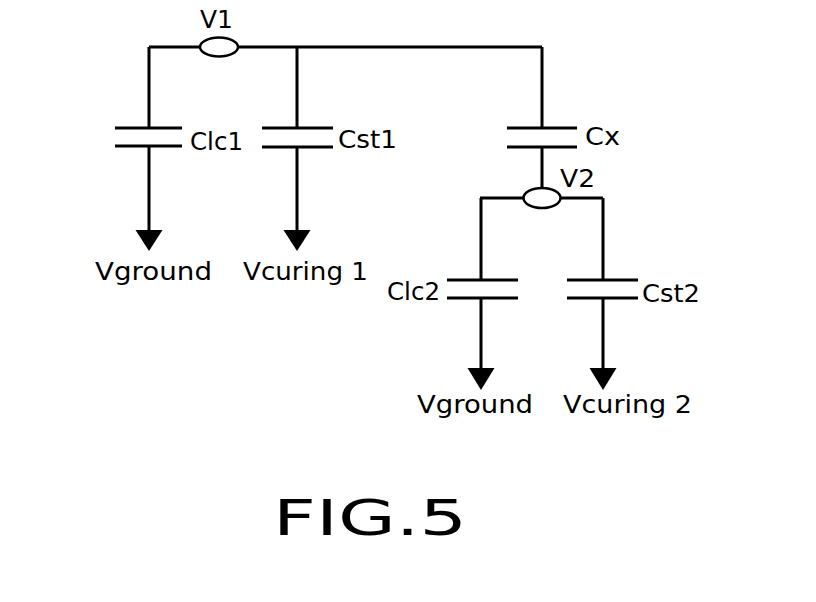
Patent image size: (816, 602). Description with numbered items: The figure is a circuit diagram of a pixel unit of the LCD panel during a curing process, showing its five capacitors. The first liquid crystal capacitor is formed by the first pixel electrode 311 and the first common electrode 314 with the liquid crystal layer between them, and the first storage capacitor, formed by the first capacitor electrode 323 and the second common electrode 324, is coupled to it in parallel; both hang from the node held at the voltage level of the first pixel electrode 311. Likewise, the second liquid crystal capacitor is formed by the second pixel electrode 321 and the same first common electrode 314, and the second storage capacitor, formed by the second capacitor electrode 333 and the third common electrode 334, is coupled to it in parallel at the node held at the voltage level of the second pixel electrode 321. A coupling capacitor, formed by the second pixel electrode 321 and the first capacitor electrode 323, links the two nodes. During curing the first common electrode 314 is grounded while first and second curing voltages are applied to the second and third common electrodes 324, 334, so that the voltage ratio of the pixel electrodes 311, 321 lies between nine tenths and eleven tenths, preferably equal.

The first pixel electrode 311 is at (133, 127).
The first common electrode 314 is at (133, 148).
The second pixel electrode 321 is at (518, 148).
The first capacitor electrode 323 is at (315, 127).
The second common electrode 324 is at (315, 148).
The second capacitor electrode 333 is at (622, 279).
The third common electrode 334 is at (622, 299).